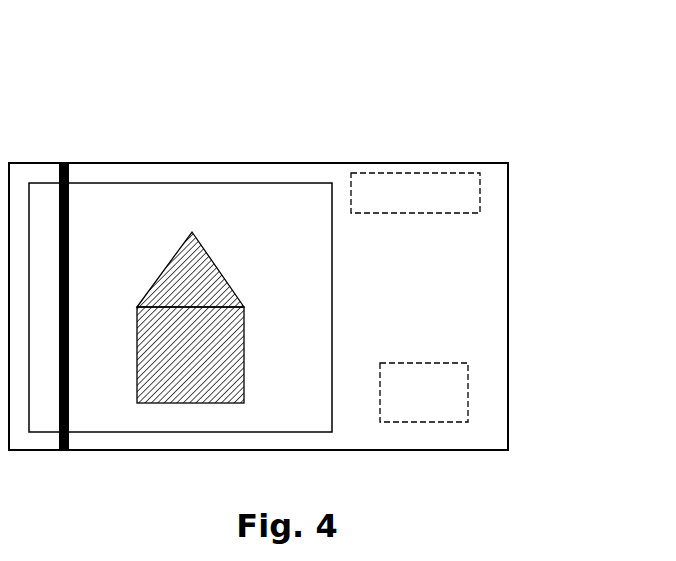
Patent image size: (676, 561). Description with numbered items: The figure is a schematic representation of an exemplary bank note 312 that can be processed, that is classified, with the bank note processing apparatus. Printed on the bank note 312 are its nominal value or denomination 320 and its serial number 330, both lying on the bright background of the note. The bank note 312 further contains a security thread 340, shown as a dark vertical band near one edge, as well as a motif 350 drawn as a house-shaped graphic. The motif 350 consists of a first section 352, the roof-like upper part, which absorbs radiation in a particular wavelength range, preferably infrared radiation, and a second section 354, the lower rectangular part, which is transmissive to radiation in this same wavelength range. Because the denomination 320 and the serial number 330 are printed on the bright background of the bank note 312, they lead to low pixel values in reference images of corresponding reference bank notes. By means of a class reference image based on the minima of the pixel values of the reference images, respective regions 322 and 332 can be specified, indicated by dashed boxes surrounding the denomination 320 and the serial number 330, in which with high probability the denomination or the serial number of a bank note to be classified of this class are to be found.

The nominal value 320 is at (493, 434).
The bank note 312 is at (508, 317).
The region 322 is at (468, 402).
The serial number 330 is at (476, 158).
The region 332 is at (480, 184).
The security thread 340 is at (58, 138).
The motif 350 is at (205, 306).
The first section 352 is at (157, 280).
The second section 354 is at (245, 347).